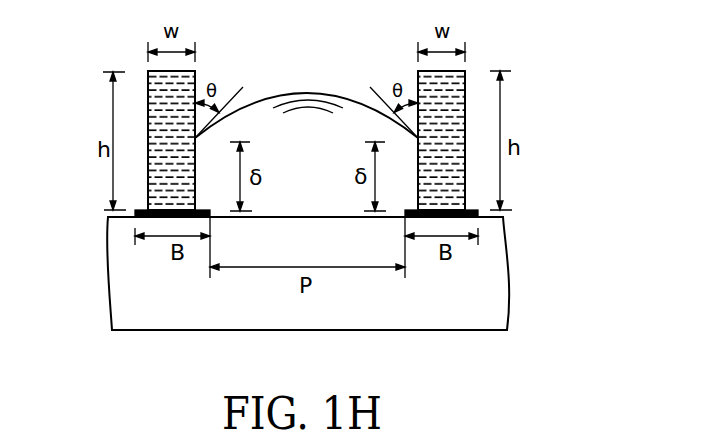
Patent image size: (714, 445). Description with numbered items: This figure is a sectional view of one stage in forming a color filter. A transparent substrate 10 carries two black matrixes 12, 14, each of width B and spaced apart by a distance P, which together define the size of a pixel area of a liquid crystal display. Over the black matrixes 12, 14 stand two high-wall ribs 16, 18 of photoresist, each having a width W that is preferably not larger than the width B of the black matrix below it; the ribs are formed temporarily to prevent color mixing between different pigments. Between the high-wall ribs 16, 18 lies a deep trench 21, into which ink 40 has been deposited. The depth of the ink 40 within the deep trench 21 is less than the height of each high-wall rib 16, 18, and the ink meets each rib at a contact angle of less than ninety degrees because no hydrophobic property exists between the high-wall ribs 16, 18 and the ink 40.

The transparent substrate 10 is at (467, 320).
The black matrix 12 is at (207, 210).
The black matrix 14 is at (415, 208).
The high-wall rib 16 is at (466, 82).
The high-wall rib 18 is at (148, 82).
The deep trench 21 is at (306, 73).
The ink 40 is at (319, 197).